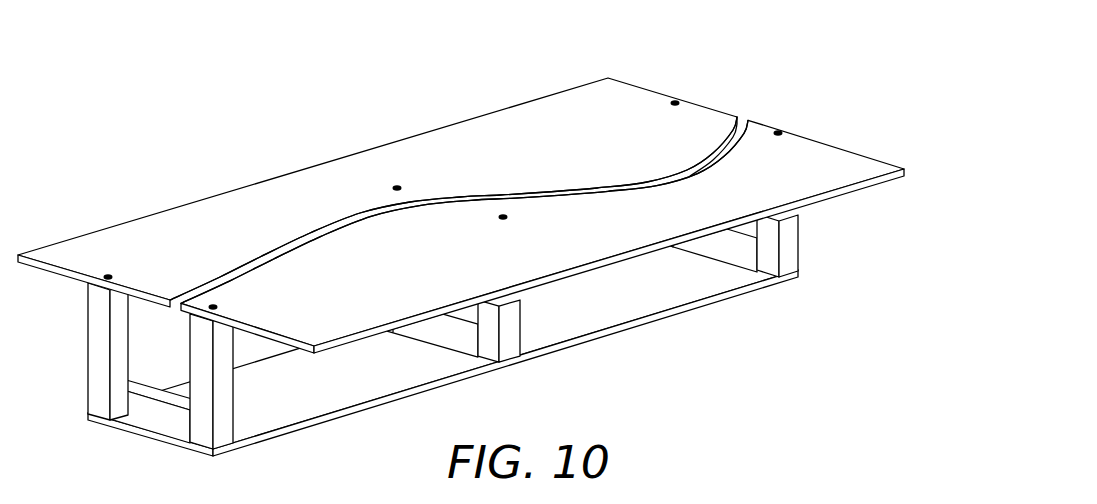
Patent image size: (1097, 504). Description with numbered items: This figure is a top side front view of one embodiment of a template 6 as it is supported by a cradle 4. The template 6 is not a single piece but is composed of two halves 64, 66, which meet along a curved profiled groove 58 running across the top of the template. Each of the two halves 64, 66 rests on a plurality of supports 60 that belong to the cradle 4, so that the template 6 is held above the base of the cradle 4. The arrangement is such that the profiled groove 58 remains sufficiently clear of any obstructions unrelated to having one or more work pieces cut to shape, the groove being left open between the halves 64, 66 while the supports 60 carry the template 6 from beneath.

The cradle 4 is at (592, 353).
The template 6 is at (486, 159).
The profiled groove 58 is at (177, 309).
The supports 60 is at (98, 323).
The first half of the template 64 is at (710, 118).
The second half of the template 66 is at (703, 70).